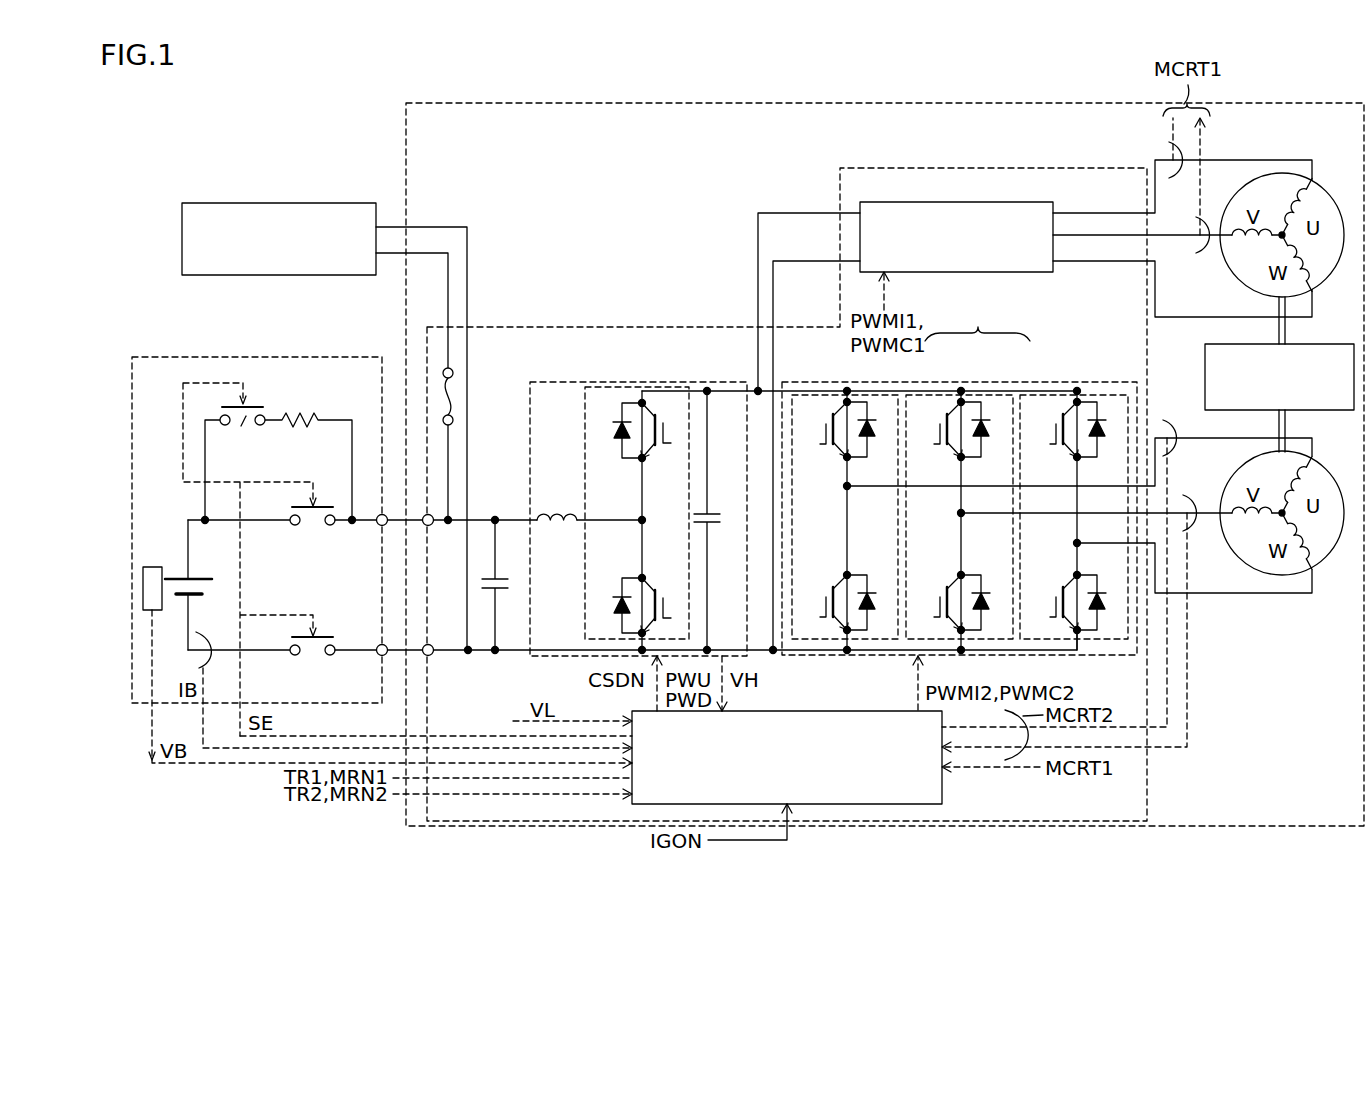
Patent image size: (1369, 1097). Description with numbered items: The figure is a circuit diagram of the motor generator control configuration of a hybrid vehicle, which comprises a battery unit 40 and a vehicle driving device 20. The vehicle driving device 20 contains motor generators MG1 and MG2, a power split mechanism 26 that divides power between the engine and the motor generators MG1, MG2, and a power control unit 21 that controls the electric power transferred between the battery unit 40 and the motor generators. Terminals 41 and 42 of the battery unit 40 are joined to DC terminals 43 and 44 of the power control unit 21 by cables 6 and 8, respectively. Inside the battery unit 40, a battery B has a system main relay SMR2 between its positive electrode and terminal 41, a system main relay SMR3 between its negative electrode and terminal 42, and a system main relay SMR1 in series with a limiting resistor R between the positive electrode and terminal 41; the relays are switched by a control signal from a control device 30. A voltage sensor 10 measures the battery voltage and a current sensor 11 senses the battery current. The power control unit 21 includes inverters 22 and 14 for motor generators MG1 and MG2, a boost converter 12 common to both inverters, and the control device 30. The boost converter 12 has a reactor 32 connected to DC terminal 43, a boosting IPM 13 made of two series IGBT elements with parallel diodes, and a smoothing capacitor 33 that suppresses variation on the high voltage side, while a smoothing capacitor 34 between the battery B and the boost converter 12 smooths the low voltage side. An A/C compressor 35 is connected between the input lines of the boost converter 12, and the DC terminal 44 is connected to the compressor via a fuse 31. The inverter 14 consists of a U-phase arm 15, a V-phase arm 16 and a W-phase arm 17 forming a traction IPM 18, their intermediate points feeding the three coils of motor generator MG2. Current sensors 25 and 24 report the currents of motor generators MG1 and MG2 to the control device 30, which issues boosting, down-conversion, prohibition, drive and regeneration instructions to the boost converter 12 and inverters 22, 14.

The cable 6 is at (395, 527).
The cable 8 is at (395, 657).
The voltage sensor 10 is at (148, 567).
The current sensor 11 is at (202, 633).
The boost converter 12 is at (530, 403).
The boosting IPM 13 is at (583, 438).
The inverter 14 is at (814, 381).
The U-phase arm 15 is at (893, 393).
The V-phase arm 16 is at (982, 393).
The W-phase arm 17 is at (1030, 393).
The traction IPM 18 is at (977, 323).
The vehicle driving device 20 is at (470, 103).
The power control unit (PCU) 21 is at (840, 180).
The inverter 22 is at (1020, 202).
The current sensor 24 is at (1165, 424).
The current sensor 25 is at (1186, 205).
The power split mechanism 26 is at (1225, 343).
The control device 30 is at (942, 791).
The fuse 31 is at (455, 397).
The reactor 32 is at (538, 514).
The smoothing capacitor 33 is at (710, 525).
The smoothing capacitor 34 is at (505, 591).
The A/C compressor 35 is at (280, 203).
The battery unit 40 is at (280, 357).
The terminal 41 is at (378, 515).
The terminal 42 is at (378, 645).
The DC terminal 43 is at (430, 527).
The DC terminal 44 is at (430, 657).
The battery B is at (173, 576).
The limiting resistor R is at (290, 418).
The system main relay SMR1 is at (243, 430).
The system main relay SMR2 is at (319, 528).
The system main relay SMR3 is at (313, 658).
The motor generator MG1 is at (1311, 188).
The motor generator MG2 is at (1330, 555).